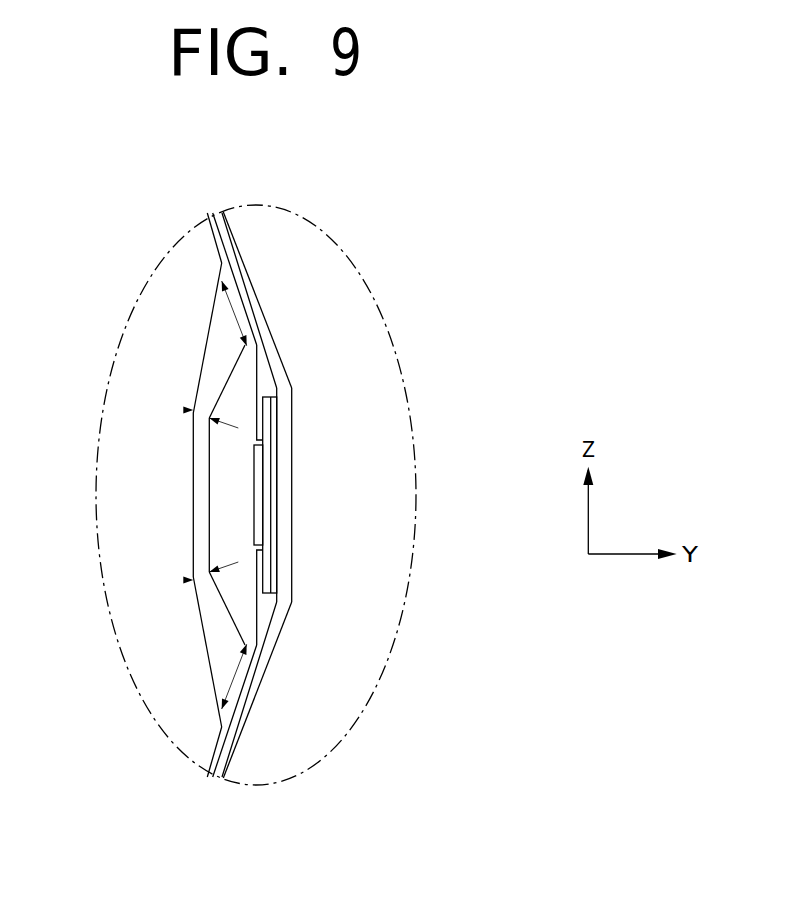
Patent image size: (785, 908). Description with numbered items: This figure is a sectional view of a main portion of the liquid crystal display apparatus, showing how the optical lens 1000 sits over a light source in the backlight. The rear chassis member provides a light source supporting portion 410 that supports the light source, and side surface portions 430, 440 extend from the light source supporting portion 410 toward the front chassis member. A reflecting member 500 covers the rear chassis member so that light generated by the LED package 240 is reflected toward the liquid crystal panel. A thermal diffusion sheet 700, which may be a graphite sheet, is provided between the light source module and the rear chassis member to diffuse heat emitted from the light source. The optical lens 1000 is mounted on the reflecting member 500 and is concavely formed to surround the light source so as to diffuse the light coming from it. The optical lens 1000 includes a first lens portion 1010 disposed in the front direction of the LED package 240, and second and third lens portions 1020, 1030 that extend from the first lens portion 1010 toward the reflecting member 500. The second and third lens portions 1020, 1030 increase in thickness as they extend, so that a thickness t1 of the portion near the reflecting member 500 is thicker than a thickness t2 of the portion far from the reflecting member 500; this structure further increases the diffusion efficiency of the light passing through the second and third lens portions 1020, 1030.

The side surface portion 440 is at (256, 316).
The light source supporting portion 410 is at (285, 482).
The side surface portion 430 is at (262, 668).
The reflecting member 500 is at (216, 739).
The optical lens 1000 is at (174, 482).
The second lens portion 1020 is at (207, 371).
The first lens portion 1010 is at (194, 534).
The third lens portion 1030 is at (203, 613).
The LED package 240 is at (262, 471).
The thermal diffusion sheet 700 is at (273, 547).
The thickness t1 is at (235, 316).
The thickness t2 is at (184, 410).